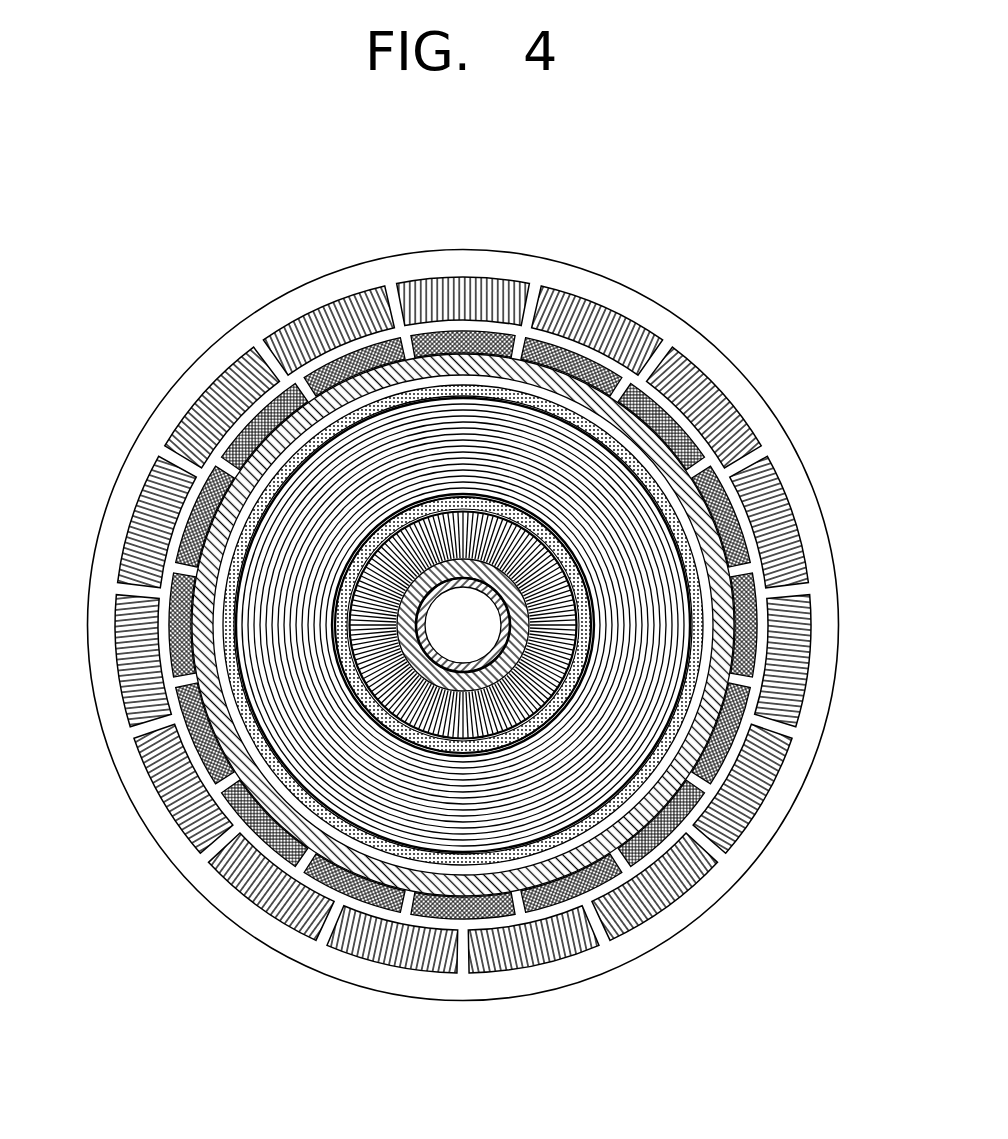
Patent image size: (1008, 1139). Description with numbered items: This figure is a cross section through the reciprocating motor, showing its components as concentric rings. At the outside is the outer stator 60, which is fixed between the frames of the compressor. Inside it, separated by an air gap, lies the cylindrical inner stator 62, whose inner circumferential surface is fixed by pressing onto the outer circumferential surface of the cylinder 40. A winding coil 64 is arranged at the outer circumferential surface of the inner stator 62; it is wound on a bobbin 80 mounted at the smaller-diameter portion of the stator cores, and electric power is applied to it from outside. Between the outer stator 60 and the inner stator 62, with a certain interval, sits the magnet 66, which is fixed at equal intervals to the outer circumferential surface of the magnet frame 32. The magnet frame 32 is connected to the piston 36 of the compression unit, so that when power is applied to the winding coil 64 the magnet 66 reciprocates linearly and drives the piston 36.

The magnet frame 32 is at (701, 888).
The piston 36 is at (456, 672).
The cylinder 40 is at (445, 688).
The outer stator 60 is at (502, 628).
The inner stator 62 is at (568, 624).
The winding coil 64 is at (250, 603).
The magnet 66 is at (724, 826).
The bobbin 80 is at (590, 912).